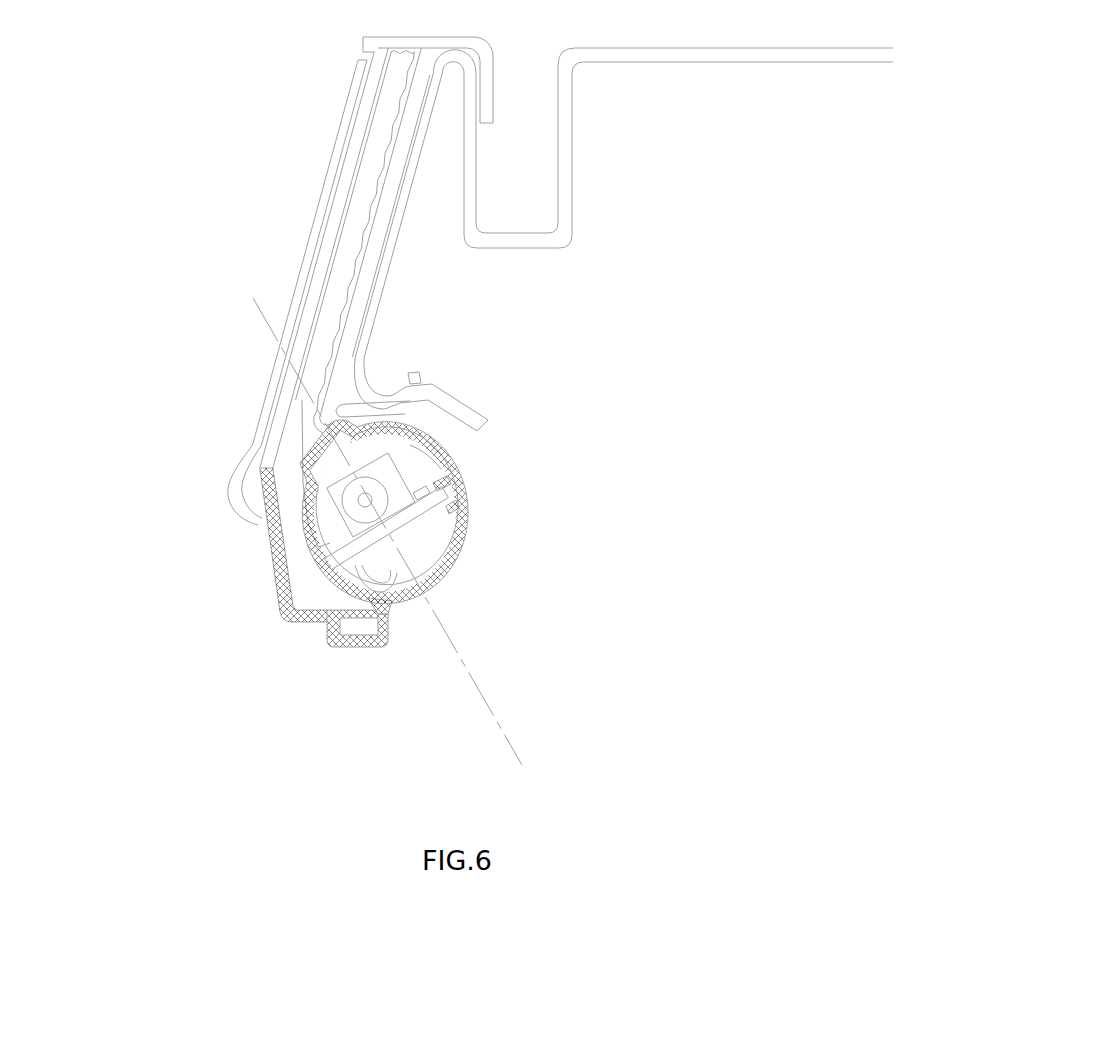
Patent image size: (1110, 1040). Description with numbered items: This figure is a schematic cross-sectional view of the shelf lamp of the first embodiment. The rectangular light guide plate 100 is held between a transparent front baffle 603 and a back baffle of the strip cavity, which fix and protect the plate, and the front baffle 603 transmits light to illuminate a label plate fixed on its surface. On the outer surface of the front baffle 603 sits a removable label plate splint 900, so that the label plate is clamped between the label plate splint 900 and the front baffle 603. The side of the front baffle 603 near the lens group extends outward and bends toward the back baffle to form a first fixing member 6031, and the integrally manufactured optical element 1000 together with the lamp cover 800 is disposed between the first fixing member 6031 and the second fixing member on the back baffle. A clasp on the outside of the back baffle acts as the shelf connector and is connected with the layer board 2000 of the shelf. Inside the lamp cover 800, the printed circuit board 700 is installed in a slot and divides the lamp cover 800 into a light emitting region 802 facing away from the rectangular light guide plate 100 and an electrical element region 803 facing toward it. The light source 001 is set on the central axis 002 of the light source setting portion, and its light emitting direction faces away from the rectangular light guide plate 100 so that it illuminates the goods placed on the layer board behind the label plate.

The rectangular light guide plate 100 is at (373, 130).
The front baffle 603 is at (323, 265).
The first fixing member 6031 is at (320, 622).
The label plate splint 900 is at (280, 372).
The optical element 1000 is at (297, 537).
The layer board 2000 is at (700, 62).
The printed circuit board 700 is at (458, 485).
The lamp cover 800 is at (465, 507).
The light emitting region 802 is at (443, 532).
The electrical element region 803 is at (410, 467).
The light source 001 is at (467, 573).
The central axis 002 is at (473, 680).